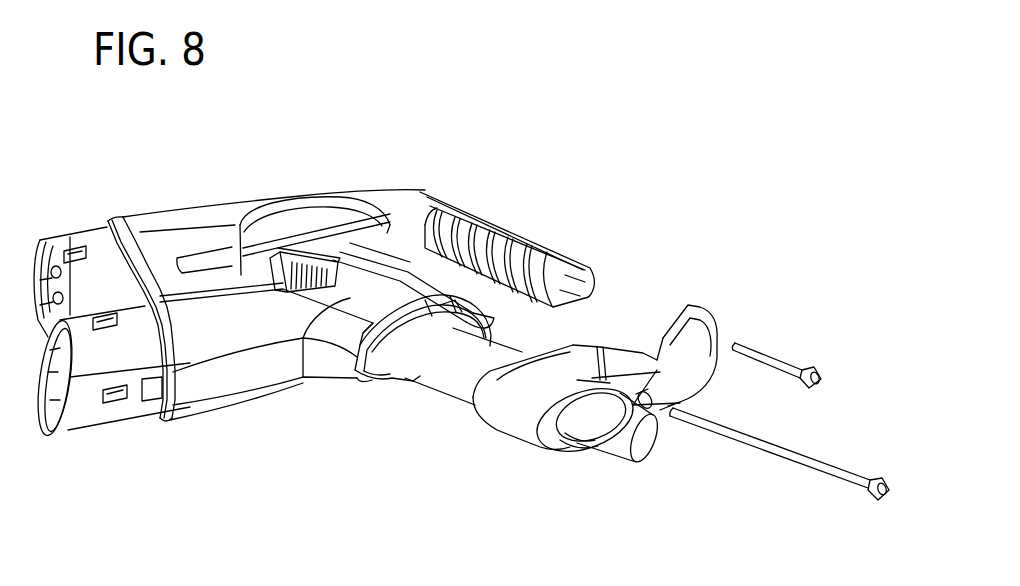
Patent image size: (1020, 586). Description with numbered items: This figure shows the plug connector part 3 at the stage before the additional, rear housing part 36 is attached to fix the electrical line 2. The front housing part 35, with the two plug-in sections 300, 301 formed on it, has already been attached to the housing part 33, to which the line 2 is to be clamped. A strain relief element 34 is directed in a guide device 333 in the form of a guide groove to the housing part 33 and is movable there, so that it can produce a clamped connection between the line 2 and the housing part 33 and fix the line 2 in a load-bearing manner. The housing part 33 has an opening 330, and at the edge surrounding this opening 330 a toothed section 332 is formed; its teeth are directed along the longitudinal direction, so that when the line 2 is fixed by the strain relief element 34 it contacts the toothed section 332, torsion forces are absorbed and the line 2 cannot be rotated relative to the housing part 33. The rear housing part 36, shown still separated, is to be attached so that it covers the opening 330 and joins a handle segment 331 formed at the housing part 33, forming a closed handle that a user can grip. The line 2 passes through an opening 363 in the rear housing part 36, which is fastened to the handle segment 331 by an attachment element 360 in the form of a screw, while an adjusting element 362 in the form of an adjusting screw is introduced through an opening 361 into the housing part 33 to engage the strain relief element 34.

The plug connector part 3 is at (250, 168).
The plug-in section 300 is at (85, 237).
The plug-in section 301 is at (87, 430).
The front housing part 35 is at (163, 420).
The housing part 33 is at (244, 397).
The strain relief element 34 is at (321, 243).
The guide device 333 is at (365, 282).
The handle segment 331 is at (529, 232).
The opening 330 is at (414, 385).
The toothed section 332 is at (396, 372).
The line 2 is at (460, 377).
The additional, rear housing part 36 is at (550, 452).
The opening 363 is at (584, 449).
The opening 361 is at (640, 392).
The attachment element 360 is at (780, 367).
The adjusting element 362 is at (813, 463).